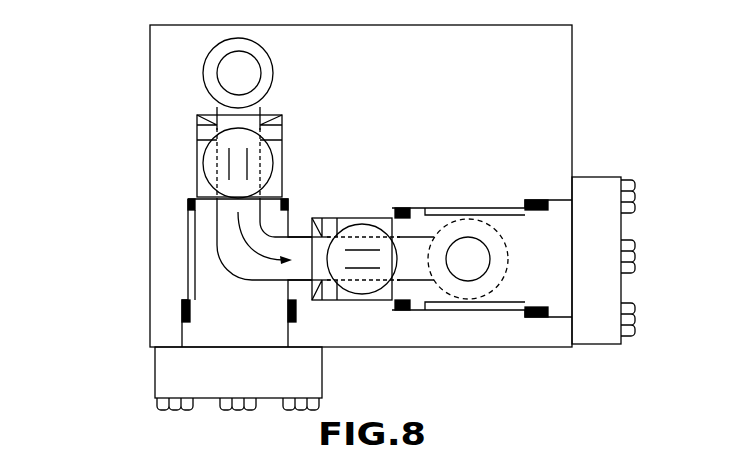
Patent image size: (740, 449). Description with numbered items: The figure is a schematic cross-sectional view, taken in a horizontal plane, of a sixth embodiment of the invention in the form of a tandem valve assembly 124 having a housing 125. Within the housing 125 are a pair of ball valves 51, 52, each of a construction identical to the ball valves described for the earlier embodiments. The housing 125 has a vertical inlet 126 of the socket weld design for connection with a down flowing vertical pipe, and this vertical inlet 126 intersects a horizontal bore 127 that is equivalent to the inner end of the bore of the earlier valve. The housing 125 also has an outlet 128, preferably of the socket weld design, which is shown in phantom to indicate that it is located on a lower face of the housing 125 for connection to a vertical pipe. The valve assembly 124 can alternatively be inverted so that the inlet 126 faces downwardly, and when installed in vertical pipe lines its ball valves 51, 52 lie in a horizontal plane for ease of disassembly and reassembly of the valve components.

The ball valve 51 is at (164, 193).
The ball valve 52 is at (369, 324).
The tandem valve assembly 124 is at (128, 106).
The housing 125 is at (150, 143).
The vertical inlet 126 is at (236, 54).
The horizontal bore 127 is at (234, 105).
The outlet 128 is at (503, 290).